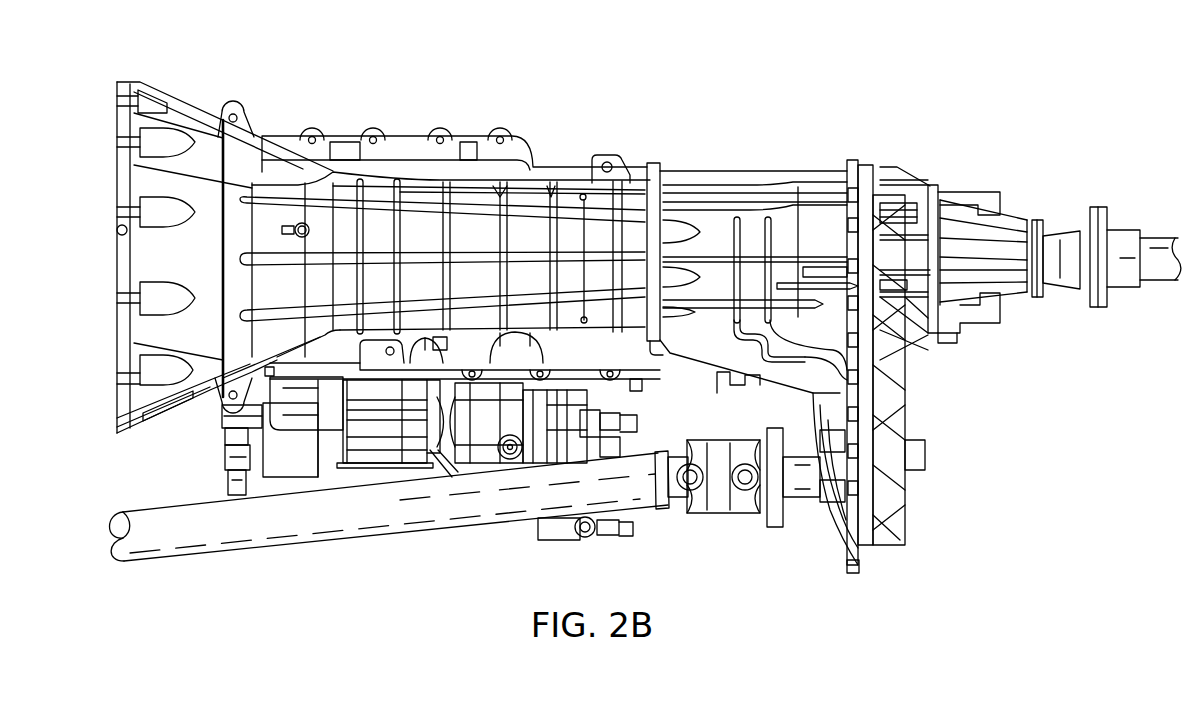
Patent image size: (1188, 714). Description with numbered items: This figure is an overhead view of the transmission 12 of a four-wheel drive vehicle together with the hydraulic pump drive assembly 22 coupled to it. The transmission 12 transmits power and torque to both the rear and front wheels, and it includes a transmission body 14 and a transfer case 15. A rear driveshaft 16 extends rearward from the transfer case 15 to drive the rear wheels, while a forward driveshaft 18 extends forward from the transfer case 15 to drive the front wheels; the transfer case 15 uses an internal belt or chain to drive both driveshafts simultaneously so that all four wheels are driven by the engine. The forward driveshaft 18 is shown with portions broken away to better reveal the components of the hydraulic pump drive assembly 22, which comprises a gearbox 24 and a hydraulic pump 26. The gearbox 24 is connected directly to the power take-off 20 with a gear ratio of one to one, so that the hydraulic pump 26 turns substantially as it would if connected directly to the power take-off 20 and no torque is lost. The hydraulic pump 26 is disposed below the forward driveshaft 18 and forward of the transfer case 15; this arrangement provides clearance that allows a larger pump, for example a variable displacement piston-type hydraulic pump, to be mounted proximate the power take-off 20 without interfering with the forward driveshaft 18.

The transmission 12 is at (344, 58).
The transmission body 14 is at (574, 130).
The transfer case 15 is at (950, 485).
The rear driveshaft 16 is at (1152, 246).
The forward driveshaft 18 is at (172, 553).
The power take-off 20 is at (292, 470).
The hydraulic pump drive assembly 22 is at (356, 487).
The gearbox 24 is at (388, 455).
The hydraulic pump 26 is at (475, 452).